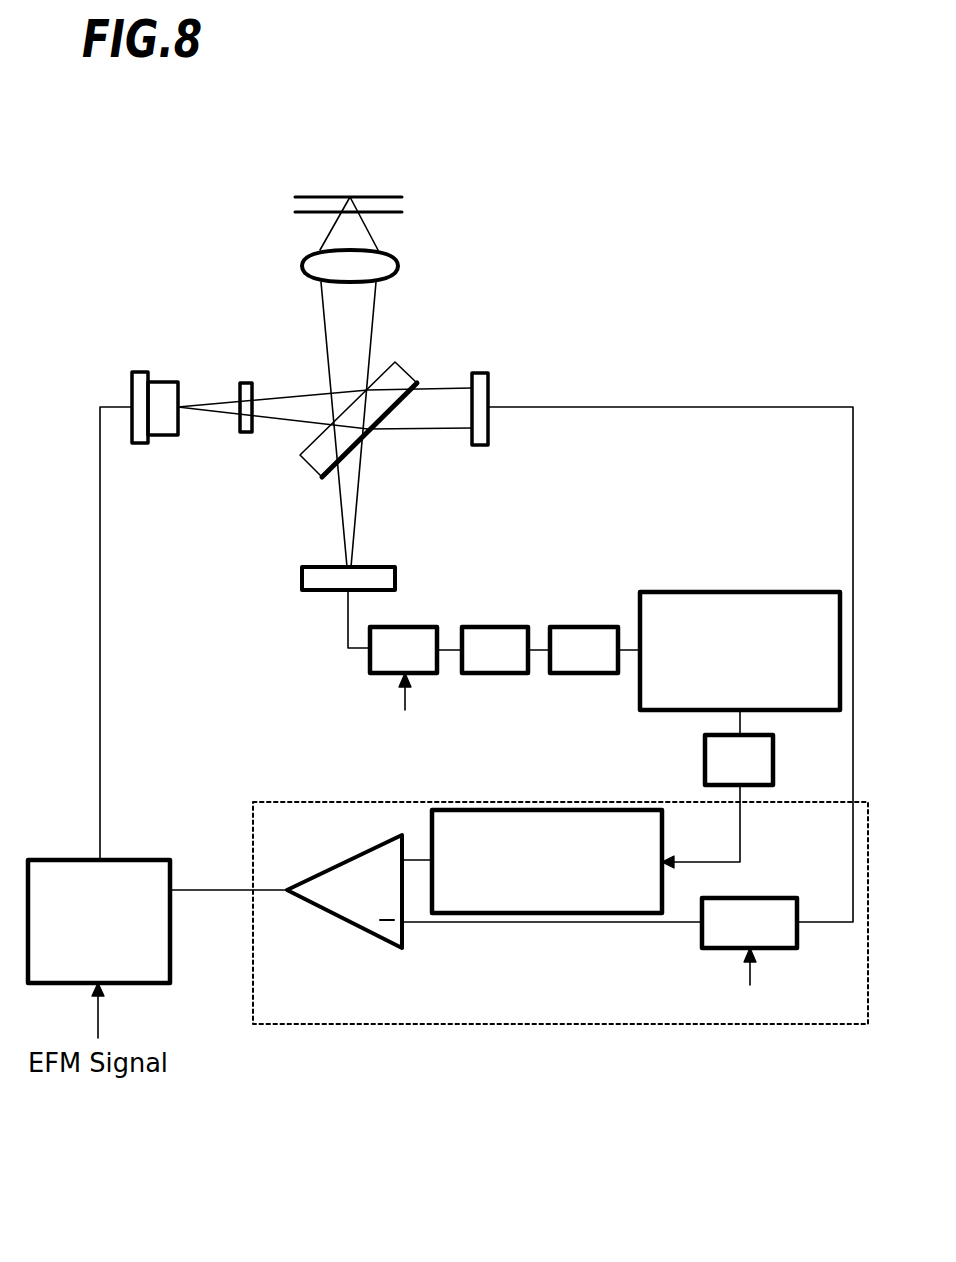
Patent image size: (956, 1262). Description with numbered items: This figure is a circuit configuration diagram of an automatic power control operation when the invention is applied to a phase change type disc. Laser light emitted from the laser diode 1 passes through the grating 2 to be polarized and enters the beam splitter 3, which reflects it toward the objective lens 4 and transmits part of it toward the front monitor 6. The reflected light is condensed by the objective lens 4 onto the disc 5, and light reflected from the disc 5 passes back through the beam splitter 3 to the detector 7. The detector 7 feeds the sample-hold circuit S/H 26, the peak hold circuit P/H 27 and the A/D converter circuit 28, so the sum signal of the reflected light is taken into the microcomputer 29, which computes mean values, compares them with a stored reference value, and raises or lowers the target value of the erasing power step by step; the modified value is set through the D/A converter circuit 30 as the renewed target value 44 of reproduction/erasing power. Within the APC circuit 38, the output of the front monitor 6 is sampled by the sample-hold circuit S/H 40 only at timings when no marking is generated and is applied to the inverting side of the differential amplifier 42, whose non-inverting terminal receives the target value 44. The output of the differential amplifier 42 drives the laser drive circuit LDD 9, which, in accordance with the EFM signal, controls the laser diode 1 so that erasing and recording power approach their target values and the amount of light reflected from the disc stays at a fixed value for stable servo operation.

The laser diode 1 is at (163, 380).
The grating 2 is at (243, 435).
The beam splitter 3 is at (405, 367).
The objective lens 4 is at (398, 254).
The disc 5 is at (405, 203).
The front monitor 6 is at (490, 380).
The detector 7 is at (377, 567).
The laser drive circuit LDD 9 is at (123, 860).
The sample-hold circuit S/H 26 is at (412, 627).
The peak hold circuit P/H 27 is at (497, 627).
The A/D converter circuit 28 is at (580, 627).
The microcomputer 29 is at (738, 592).
The D/A converter circuit 30 is at (705, 762).
The APC circuit 38 is at (400, 1007).
The sample-hold circuit S/H 40 is at (782, 898).
The differential amplifier 42 is at (342, 862).
The target value 44 is at (662, 898).